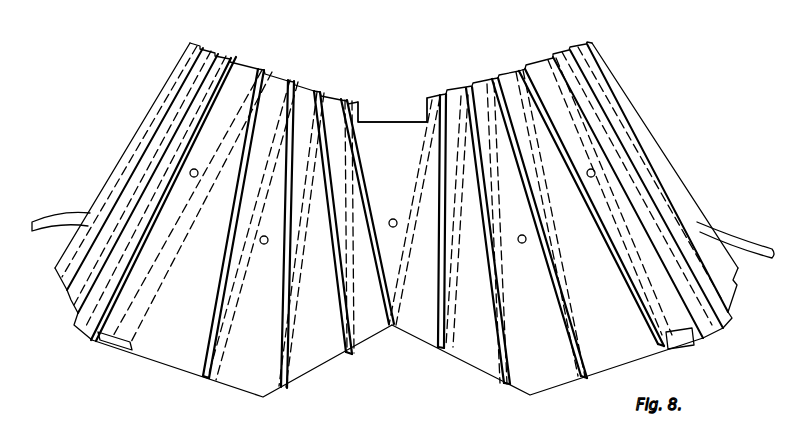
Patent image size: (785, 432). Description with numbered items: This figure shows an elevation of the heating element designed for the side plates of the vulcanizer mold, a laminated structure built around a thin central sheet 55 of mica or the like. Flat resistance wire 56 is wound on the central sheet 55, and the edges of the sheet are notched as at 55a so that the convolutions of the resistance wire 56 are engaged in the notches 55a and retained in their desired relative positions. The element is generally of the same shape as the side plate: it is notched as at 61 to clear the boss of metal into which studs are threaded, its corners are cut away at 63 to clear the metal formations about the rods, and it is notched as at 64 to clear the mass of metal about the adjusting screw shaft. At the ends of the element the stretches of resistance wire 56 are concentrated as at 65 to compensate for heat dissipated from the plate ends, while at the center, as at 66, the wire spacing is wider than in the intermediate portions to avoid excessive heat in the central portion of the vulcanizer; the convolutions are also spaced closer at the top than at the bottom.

The central sheet 55 is at (247, 397).
The notches 55a is at (292, 80).
The resistance wire 56 is at (212, 313).
The notch 61 is at (393, 121).
The cut-away corners 63 is at (54, 270).
The notch 64 is at (410, 338).
The concentrated convolutions 65 is at (172, 124).
The center spacing 66 is at (400, 170).